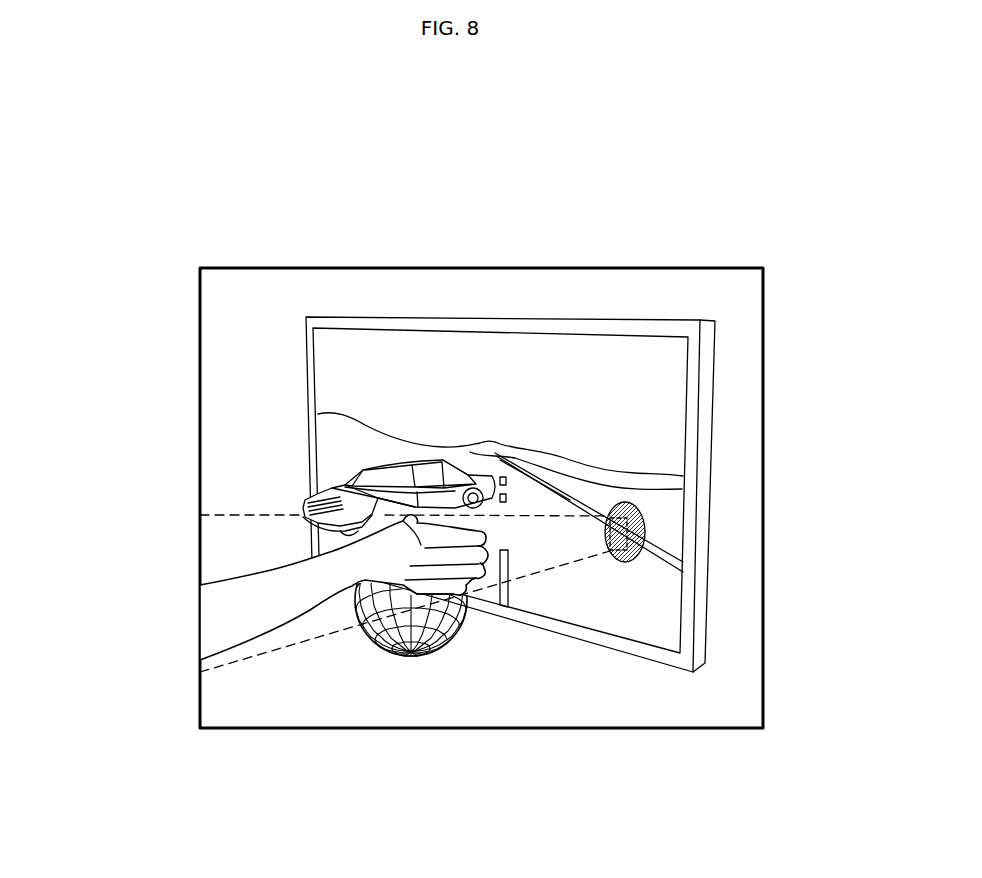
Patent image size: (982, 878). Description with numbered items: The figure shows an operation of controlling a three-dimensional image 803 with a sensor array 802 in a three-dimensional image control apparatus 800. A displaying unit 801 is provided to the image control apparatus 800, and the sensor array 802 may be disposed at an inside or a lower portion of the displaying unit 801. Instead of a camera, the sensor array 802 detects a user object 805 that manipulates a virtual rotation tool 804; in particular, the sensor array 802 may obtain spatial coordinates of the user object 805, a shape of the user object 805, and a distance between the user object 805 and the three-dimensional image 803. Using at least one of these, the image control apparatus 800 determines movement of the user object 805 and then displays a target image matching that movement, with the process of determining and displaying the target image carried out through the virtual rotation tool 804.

The 3D image control apparatus 800 is at (495, 326).
The displaying unit 801 is at (335, 370).
The sensor array 802 is at (637, 527).
The 3D image 803 is at (365, 497).
The virtual rotation tool 804 is at (421, 658).
The user object 805 is at (268, 615).